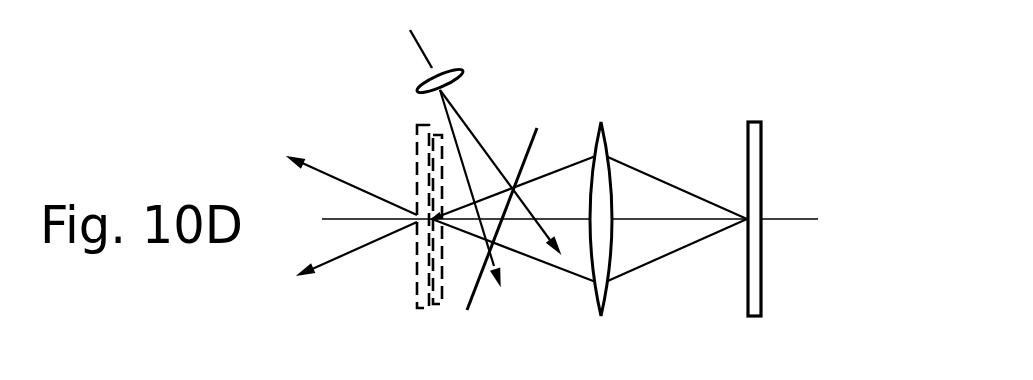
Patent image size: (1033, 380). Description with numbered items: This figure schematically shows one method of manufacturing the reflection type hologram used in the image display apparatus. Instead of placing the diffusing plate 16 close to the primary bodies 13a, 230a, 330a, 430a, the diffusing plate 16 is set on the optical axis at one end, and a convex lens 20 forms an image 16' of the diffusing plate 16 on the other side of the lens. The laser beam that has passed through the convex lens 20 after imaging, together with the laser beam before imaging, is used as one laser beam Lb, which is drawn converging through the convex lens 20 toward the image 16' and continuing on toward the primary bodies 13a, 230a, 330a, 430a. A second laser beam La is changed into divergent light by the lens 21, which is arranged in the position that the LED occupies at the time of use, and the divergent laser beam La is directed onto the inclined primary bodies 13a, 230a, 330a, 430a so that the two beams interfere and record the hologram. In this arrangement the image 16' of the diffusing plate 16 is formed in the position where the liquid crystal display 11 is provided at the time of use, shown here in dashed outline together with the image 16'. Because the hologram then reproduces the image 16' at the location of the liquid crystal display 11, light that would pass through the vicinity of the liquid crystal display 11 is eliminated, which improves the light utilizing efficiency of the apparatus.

The liquid crystal display 11 is at (418, 293).
The image of the diffusing plate 16' is at (466, 248).
The lens 21 is at (420, 94).
The laser beam La is at (500, 187).
The primary body 13a is at (654, 184).
The primary body 230a is at (654, 184).
The primary body 330a is at (654, 184).
The primary body 430a is at (530, 143).
The laser beam Lb is at (589, 225).
The convex lens 20 is at (605, 127).
The diffusing plate 16 is at (797, 223).